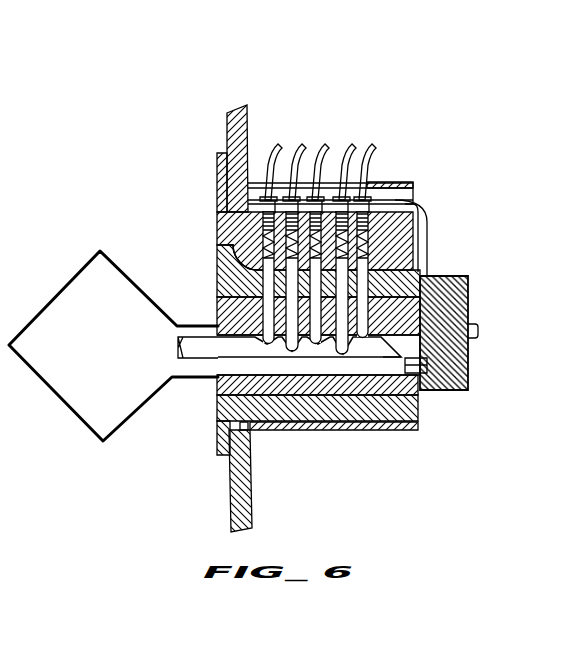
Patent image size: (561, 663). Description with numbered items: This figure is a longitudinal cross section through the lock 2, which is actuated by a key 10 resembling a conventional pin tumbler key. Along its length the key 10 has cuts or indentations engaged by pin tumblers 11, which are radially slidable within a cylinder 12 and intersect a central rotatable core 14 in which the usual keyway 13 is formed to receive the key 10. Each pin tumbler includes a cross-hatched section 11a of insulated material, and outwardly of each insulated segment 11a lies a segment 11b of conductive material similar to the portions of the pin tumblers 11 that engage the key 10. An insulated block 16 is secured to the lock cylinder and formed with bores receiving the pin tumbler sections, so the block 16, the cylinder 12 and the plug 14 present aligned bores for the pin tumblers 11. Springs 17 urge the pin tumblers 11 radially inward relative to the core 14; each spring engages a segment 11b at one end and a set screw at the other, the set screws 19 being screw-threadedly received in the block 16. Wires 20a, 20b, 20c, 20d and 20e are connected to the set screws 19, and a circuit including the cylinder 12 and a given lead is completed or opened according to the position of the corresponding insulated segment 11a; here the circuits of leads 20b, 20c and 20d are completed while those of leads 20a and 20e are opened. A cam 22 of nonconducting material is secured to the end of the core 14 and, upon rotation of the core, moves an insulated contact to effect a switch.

The lock 2 is at (393, 434).
The key 10 is at (163, 305).
The pin tumblers 11 is at (258, 322).
The insulated section 11a is at (422, 263).
The conductive segment 11b is at (236, 228).
The cylinder 12 is at (228, 247).
The keyway 13 is at (424, 353).
The core 14 is at (218, 389).
The insulated block 16 is at (427, 224).
The springs 17 is at (418, 212).
The set screws 19 is at (412, 204).
The wire 20a is at (279, 148).
The wire 20b is at (303, 146).
The wire 20c is at (326, 148).
The wire 20d is at (352, 146).
The wire 20e is at (367, 148).
The cam 22 is at (470, 302).